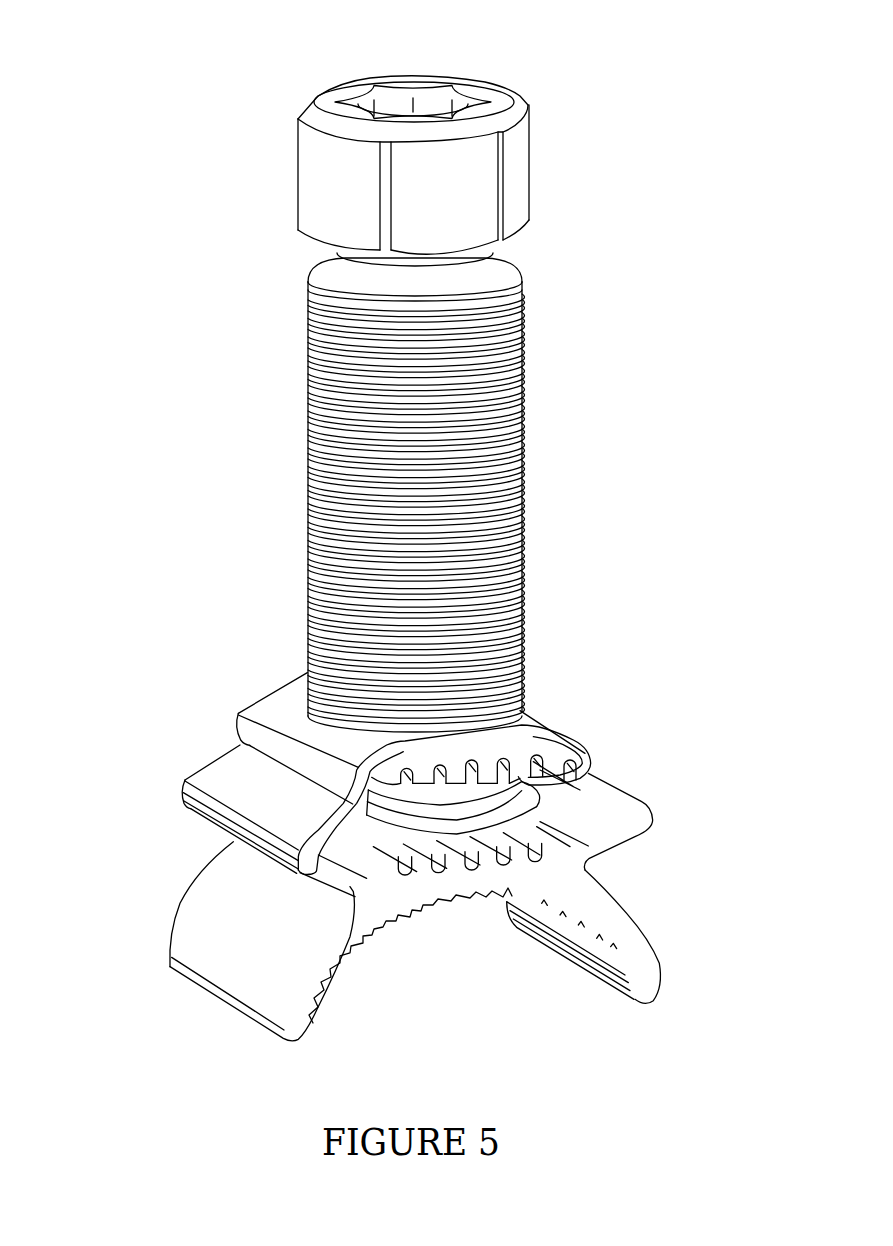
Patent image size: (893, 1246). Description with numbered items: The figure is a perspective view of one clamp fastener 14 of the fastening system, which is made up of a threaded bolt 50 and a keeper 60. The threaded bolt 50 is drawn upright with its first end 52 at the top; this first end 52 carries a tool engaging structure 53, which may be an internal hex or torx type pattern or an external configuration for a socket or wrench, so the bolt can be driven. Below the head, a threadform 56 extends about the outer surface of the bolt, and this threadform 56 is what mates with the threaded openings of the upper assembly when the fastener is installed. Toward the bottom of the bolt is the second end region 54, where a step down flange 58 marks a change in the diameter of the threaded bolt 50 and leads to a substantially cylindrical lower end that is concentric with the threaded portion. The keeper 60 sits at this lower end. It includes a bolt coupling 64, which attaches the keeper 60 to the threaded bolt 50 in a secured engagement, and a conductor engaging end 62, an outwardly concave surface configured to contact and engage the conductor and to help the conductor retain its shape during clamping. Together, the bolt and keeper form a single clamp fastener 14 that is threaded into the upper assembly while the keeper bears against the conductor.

The clamp fastener 14 is at (220, 362).
The threaded bolt 50 is at (545, 360).
The first end 52 is at (540, 165).
The tool engaging structure 53 is at (430, 65).
The second end region 54 is at (668, 773).
The threadform 56 is at (521, 455).
The step down flange 58 is at (512, 762).
The keeper 60 is at (132, 856).
The conductor engaging end 62 is at (556, 918).
The bolt coupling 64 is at (432, 908).